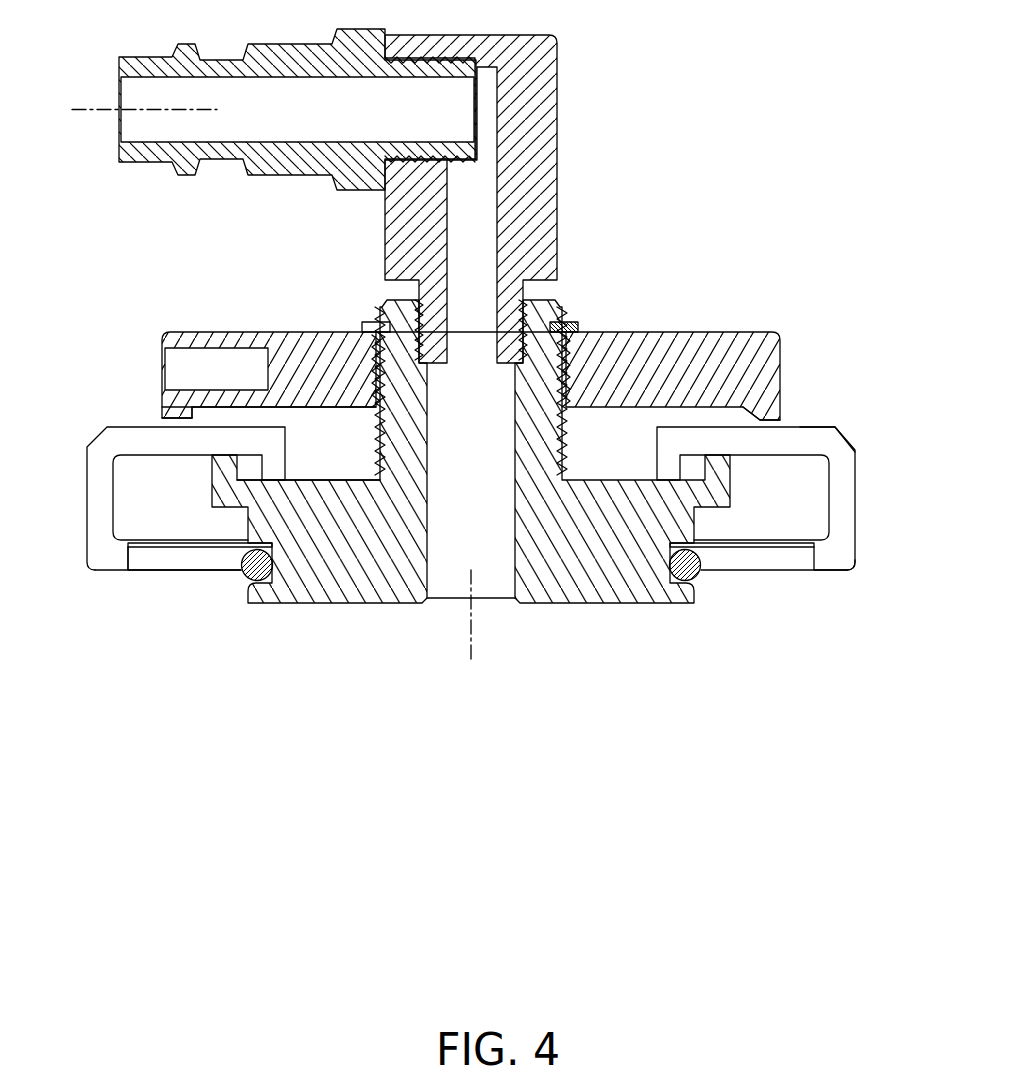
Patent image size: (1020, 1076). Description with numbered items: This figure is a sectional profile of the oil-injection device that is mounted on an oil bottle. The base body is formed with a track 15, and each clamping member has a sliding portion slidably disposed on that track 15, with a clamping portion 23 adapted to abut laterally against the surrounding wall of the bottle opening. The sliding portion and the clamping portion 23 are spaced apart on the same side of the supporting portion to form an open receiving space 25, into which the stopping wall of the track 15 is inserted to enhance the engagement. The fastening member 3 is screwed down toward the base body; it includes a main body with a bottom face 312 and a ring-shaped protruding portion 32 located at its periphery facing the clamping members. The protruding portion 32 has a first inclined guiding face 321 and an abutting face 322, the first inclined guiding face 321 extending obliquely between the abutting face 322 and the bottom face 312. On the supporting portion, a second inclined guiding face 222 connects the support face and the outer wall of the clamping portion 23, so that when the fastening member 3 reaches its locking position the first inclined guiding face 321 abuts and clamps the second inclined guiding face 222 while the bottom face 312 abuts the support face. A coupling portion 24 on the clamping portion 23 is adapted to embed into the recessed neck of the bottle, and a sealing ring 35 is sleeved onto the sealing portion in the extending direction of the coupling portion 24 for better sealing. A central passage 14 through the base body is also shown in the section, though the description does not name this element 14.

The fastening member 3 is at (682, 353).
The through hole 14 is at (447, 580).
The track 15 is at (348, 467).
The clamping portion 23 is at (843, 493).
The coupling portion 24 is at (835, 562).
The receiving space 25 is at (180, 522).
The protruding portion 32 is at (773, 415).
The sealing ring 35 is at (697, 570).
The second inclined guiding face 222 is at (850, 428).
The bottom face 312 is at (608, 407).
The first inclined guiding face 321 is at (190, 412).
The abutting face 322 is at (192, 403).